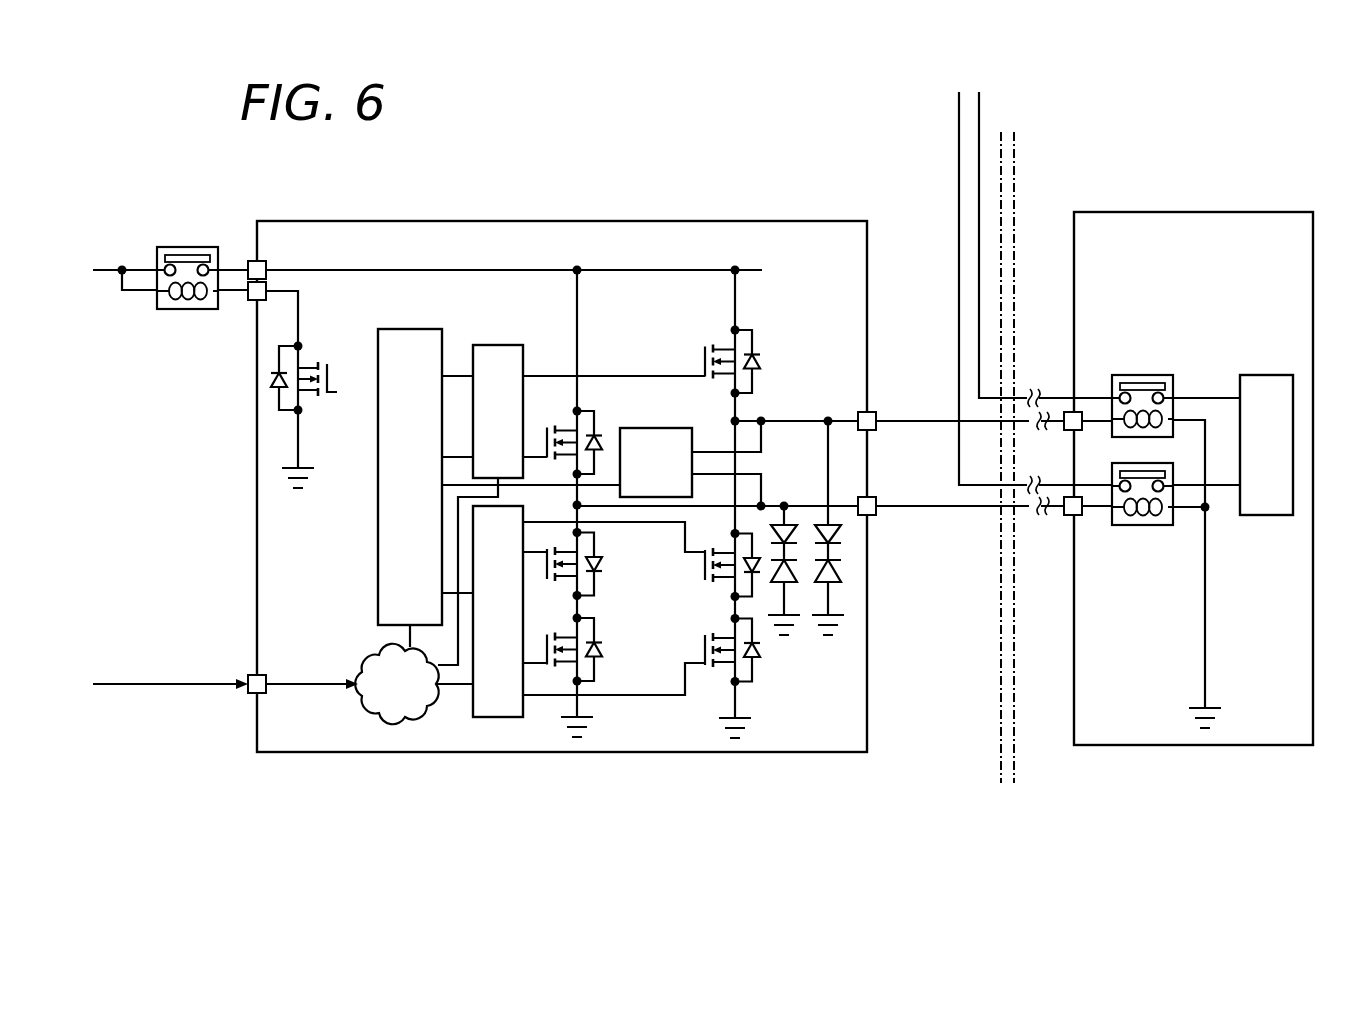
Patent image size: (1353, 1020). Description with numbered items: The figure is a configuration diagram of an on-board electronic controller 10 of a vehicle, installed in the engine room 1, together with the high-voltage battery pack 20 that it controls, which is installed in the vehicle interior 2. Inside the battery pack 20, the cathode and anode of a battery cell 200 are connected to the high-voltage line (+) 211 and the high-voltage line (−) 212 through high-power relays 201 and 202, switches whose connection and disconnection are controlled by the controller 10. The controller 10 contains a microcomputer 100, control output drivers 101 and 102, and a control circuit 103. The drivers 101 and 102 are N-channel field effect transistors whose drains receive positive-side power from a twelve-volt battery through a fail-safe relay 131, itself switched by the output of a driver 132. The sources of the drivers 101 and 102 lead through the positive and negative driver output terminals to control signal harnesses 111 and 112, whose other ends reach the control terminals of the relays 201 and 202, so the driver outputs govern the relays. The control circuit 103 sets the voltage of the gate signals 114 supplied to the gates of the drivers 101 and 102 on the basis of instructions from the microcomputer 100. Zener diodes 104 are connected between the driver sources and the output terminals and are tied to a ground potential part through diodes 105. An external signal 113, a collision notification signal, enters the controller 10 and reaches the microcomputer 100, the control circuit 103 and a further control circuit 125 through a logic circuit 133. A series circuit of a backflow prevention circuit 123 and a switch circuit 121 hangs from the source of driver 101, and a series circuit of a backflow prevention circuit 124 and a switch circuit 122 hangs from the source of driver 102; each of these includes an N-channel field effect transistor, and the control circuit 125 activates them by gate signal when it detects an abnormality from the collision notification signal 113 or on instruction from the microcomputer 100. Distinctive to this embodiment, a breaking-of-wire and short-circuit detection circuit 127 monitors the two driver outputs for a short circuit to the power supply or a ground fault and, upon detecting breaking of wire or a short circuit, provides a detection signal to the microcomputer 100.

The engine room 1 is at (798, 104).
The vehicle interior 2 is at (1186, 104).
The on-board electronic controller 10 is at (498, 220).
The high-voltage battery pack 20 is at (1292, 212).
The microcomputer 100 is at (390, 586).
The control output driver 101 is at (762, 350).
The control output driver 102 is at (600, 437).
The control circuit 103 is at (497, 356).
The Zener diode 104 is at (827, 524).
The diode 105 is at (795, 583).
The control signal harness 111 is at (948, 420).
The control signal harness 112 is at (930, 510).
The external signal (collision notification signal) 113 is at (200, 683).
The gate signal 114 is at (677, 376).
The switch circuit 121 is at (760, 678).
The switch circuit 122 is at (600, 677).
The backflow prevention circuit 123 is at (700, 578).
The backflow prevention circuit 124 is at (602, 556).
The control circuit 125 is at (498, 708).
The breaking-of-wire and short-circuit detection circuit 127 is at (660, 428).
The relay 131 is at (190, 247).
The driver 132 is at (320, 362).
The logic circuit 133 is at (398, 722).
The battery cell 200 is at (1258, 517).
The high-power relay 201 is at (1137, 375).
The high-power relay 202 is at (1135, 527).
The high-voltage line (+) 211 is at (980, 204).
The high-voltage line (−) 212 is at (957, 190).